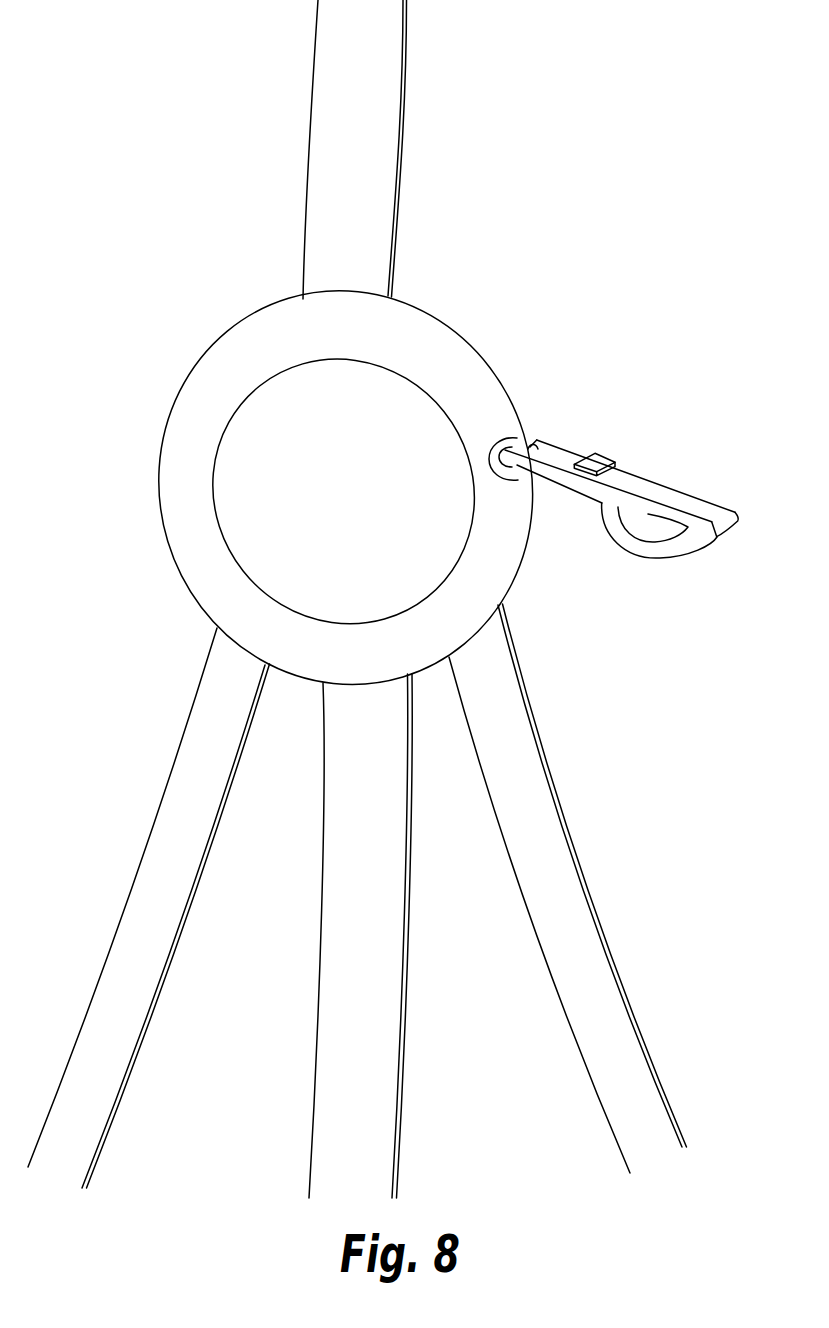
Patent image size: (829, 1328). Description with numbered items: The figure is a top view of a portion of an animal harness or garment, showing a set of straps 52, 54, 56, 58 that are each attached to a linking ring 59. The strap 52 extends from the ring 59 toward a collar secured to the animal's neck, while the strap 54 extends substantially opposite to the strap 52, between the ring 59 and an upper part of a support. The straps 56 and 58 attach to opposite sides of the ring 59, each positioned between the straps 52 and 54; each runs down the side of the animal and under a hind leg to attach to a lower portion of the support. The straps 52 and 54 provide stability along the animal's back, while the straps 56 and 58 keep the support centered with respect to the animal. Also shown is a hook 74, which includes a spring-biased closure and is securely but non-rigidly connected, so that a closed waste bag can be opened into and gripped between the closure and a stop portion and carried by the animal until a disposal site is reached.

The strap 52 is at (303, 93).
The strap 54 is at (310, 933).
The strap 56 is at (570, 804).
The strap 58 is at (146, 804).
The linking ring 59 is at (189, 373).
The hook 74 is at (647, 464).